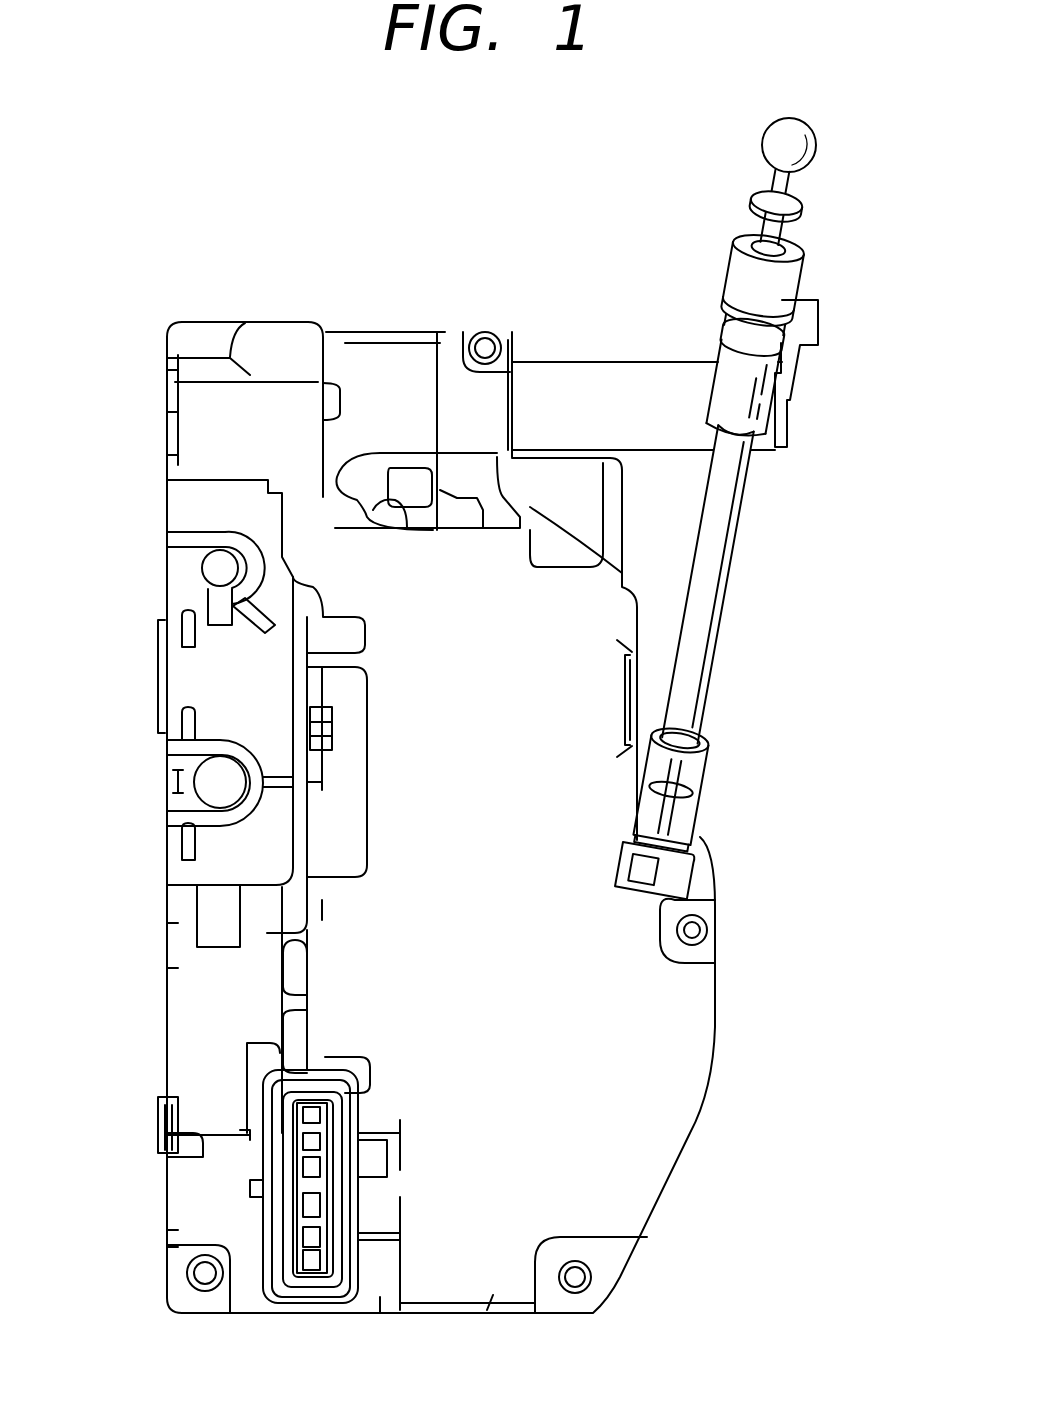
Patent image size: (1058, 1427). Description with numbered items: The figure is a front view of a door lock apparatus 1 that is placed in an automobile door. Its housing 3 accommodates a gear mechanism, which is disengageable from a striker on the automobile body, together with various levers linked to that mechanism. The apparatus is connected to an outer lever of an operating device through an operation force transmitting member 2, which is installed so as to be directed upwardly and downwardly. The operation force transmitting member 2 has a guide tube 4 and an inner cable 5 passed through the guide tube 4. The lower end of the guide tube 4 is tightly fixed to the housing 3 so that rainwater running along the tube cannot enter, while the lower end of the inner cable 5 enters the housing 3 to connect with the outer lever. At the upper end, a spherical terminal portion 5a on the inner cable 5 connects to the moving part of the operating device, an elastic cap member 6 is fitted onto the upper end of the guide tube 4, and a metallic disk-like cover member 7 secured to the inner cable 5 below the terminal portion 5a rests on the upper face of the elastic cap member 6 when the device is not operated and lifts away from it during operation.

The door lock apparatus 1 is at (157, 665).
The operation force transmitting member 2 is at (741, 588).
The housing 3 is at (710, 1100).
The guide tube 4 is at (722, 637).
The inner cable 5 is at (770, 177).
The spherical terminal portion 5a is at (762, 136).
The elastic cap member 6 is at (733, 270).
The cover member 7 is at (753, 207).